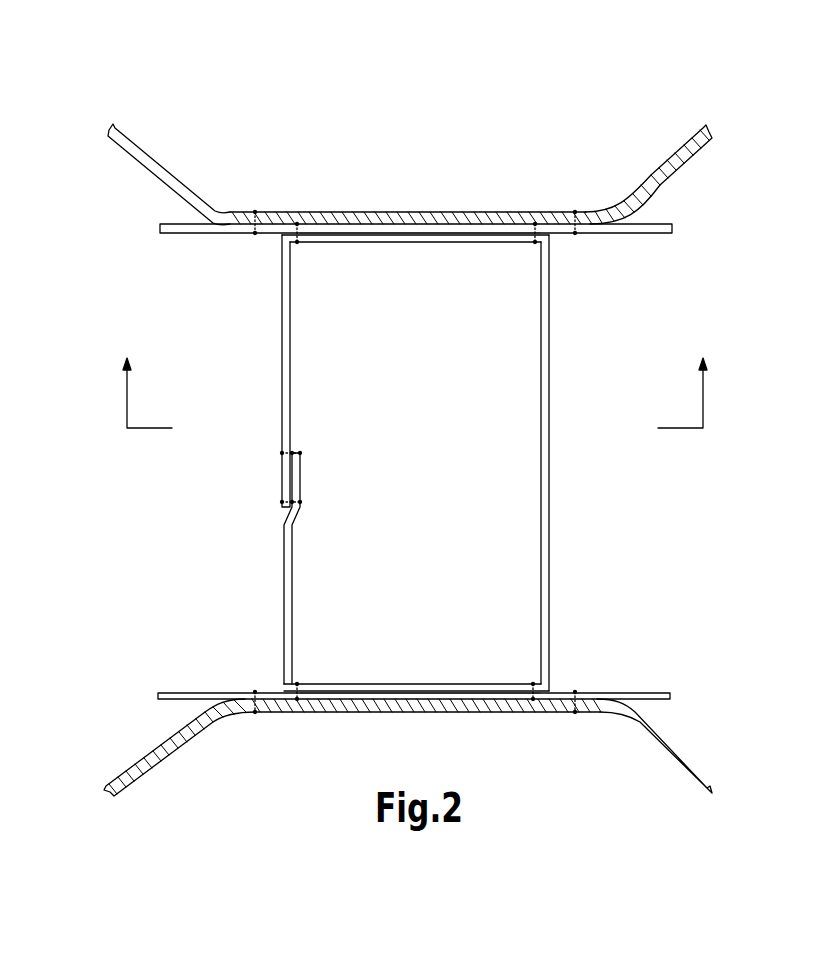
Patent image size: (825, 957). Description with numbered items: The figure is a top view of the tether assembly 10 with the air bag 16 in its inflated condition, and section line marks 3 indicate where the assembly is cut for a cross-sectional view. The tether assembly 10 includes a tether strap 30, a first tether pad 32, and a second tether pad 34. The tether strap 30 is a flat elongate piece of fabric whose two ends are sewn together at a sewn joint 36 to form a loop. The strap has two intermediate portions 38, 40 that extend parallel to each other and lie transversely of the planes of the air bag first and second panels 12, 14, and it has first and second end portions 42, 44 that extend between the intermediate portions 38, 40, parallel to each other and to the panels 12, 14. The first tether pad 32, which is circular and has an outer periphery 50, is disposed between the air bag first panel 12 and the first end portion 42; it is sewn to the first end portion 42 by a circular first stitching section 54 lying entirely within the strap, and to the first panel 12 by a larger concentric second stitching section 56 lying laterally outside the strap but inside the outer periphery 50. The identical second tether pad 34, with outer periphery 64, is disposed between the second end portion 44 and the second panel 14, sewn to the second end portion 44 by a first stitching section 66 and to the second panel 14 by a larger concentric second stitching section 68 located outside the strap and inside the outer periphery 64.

The section line 3- 3 is at (417, 380).
The tether assembly 10 is at (418, 165).
The air bag first panel 12 is at (712, 125).
The air bag second panel 14 is at (143, 770).
The air bag 16 is at (663, 110).
The tether strap 30 is at (428, 463).
The first tether pad 32 is at (605, 249).
The second tether pad 34 is at (202, 680).
The sewn joint 36 is at (282, 474).
The first intermediate portion 38 is at (282, 372).
The second intermediate portion 40 is at (549, 415).
The first end portion 42 is at (406, 242).
The second end portion 44 is at (403, 682).
The outer periphery 50 is at (672, 228).
The first stitching section 54 is at (297, 244).
The second stitching section 56 is at (255, 210).
The outer periphery 64 is at (157, 694).
The first stitching section 66 is at (297, 683).
The second stitching section 68 is at (255, 714).